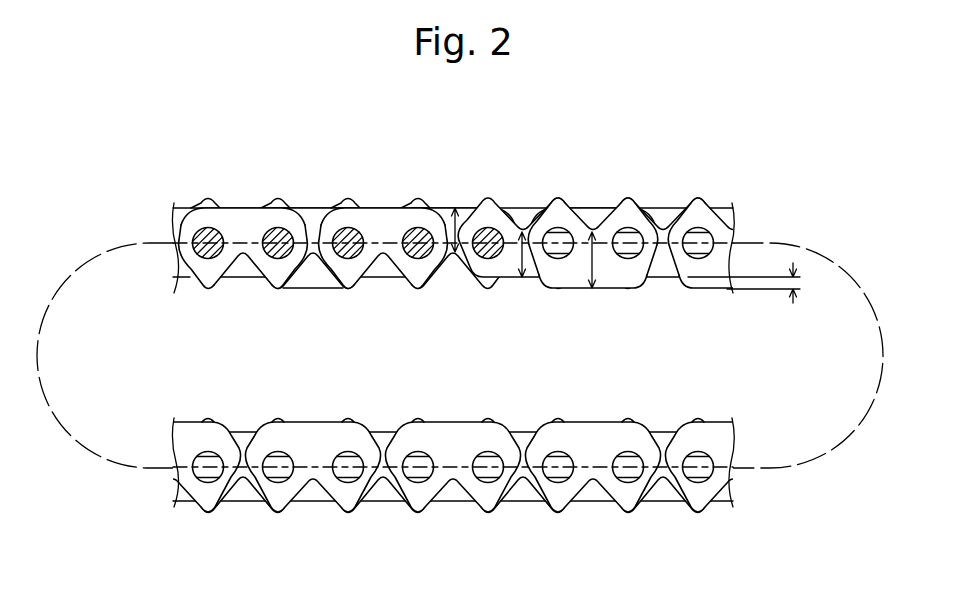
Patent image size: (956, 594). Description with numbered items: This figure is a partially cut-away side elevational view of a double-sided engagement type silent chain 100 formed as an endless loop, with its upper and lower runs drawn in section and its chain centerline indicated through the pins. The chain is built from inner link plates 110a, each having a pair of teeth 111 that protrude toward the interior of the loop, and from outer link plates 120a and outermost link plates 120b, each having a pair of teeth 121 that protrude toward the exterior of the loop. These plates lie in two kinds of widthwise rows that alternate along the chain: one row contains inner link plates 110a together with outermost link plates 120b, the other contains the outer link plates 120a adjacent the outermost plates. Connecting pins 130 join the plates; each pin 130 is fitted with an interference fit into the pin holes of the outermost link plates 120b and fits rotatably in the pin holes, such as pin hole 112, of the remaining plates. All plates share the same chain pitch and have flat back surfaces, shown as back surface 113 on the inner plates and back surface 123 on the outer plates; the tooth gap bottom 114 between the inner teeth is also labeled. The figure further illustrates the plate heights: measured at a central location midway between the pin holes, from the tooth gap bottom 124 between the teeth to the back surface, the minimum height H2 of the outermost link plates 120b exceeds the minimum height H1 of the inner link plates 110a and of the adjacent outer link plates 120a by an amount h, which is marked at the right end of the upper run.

The silent chain 100 is at (612, 185).
The inner link plate 110a is at (242, 222).
The teeth 111 is at (279, 281).
The pin hole 112 is at (192, 277).
The back surface 113 is at (389, 208).
The crotch of first link plate 114 is at (242, 254).
The outer link plate 120a is at (386, 264).
The outermost link plate 120b is at (309, 283).
The teeth 121 is at (280, 198).
The back surface 123 is at (533, 280).
The tooth gap bottom 124 is at (452, 488).
The connecting pin 130 is at (203, 236).
The minimum height H1 is at (454, 208).
The minimum height H2 is at (640, 288).
The height difference h is at (744, 298).